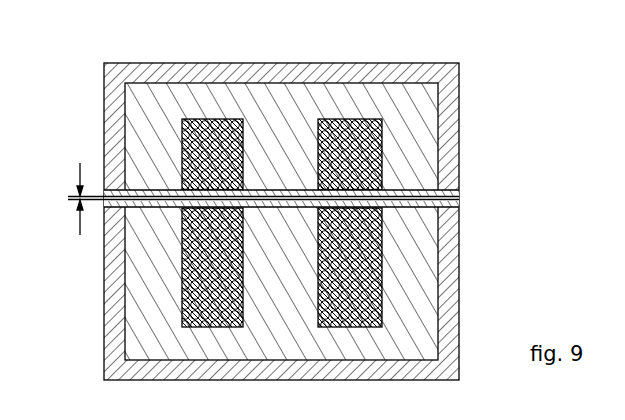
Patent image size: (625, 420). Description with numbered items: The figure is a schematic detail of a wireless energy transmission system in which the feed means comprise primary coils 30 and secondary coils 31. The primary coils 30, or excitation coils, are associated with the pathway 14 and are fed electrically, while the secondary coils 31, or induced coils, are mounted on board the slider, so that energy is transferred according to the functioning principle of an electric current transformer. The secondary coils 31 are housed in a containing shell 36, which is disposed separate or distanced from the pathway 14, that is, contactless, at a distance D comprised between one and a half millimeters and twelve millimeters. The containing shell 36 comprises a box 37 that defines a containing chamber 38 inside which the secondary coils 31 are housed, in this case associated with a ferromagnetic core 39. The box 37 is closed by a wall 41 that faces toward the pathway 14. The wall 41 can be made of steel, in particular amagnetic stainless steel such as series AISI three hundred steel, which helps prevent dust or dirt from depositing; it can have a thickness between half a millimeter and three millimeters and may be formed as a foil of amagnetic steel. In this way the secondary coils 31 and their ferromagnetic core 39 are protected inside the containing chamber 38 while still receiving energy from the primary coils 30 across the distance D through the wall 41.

The containing shell 36 is at (104, 95).
The box 37 is at (118, 151).
The containing chamber 38 is at (438, 90).
The ferromagnetic core 39 is at (391, 92).
The secondary coils 31 is at (367, 132).
The primary coils 30 is at (358, 228).
The wall 41 is at (447, 196).
The pathway 14 is at (115, 305).
The distance D is at (76, 197).